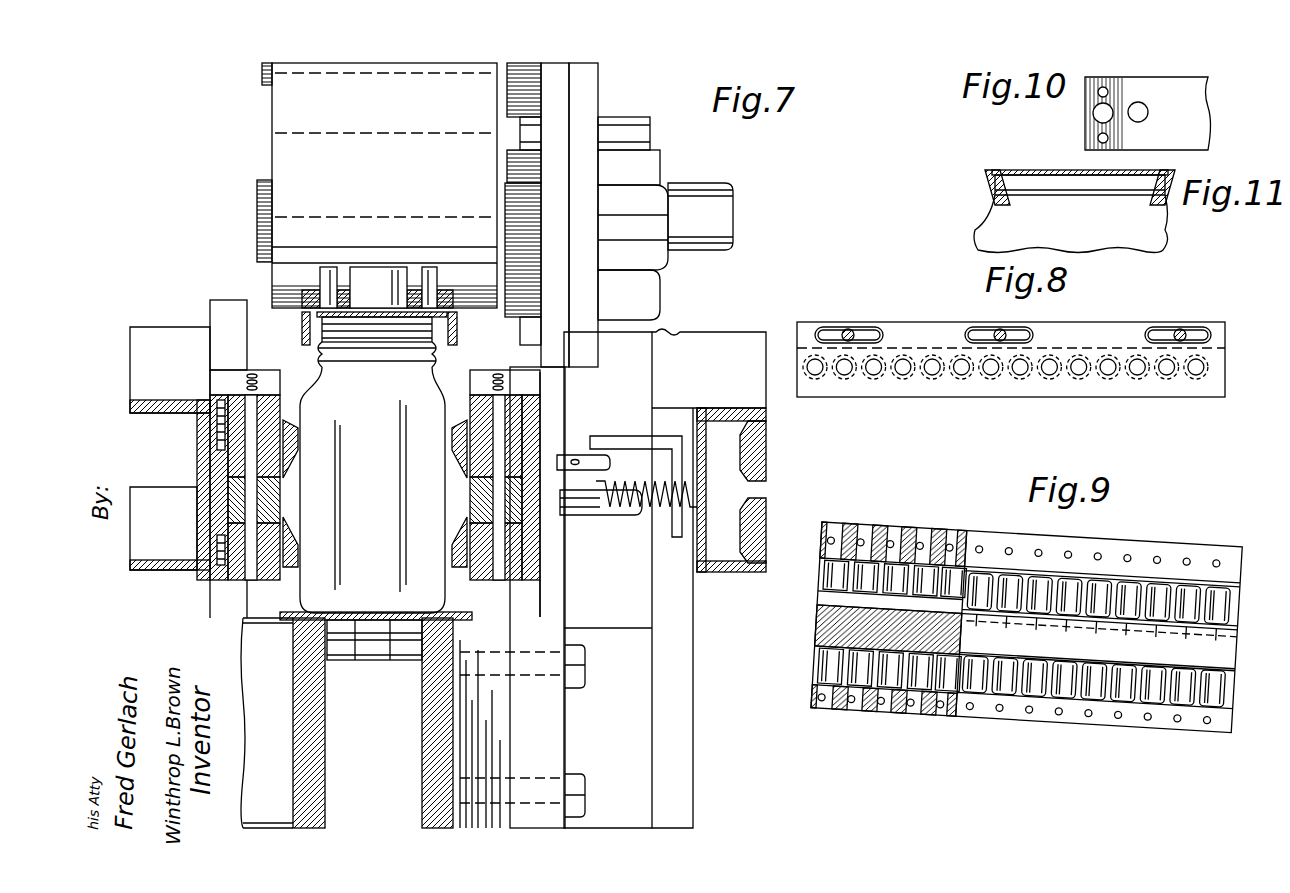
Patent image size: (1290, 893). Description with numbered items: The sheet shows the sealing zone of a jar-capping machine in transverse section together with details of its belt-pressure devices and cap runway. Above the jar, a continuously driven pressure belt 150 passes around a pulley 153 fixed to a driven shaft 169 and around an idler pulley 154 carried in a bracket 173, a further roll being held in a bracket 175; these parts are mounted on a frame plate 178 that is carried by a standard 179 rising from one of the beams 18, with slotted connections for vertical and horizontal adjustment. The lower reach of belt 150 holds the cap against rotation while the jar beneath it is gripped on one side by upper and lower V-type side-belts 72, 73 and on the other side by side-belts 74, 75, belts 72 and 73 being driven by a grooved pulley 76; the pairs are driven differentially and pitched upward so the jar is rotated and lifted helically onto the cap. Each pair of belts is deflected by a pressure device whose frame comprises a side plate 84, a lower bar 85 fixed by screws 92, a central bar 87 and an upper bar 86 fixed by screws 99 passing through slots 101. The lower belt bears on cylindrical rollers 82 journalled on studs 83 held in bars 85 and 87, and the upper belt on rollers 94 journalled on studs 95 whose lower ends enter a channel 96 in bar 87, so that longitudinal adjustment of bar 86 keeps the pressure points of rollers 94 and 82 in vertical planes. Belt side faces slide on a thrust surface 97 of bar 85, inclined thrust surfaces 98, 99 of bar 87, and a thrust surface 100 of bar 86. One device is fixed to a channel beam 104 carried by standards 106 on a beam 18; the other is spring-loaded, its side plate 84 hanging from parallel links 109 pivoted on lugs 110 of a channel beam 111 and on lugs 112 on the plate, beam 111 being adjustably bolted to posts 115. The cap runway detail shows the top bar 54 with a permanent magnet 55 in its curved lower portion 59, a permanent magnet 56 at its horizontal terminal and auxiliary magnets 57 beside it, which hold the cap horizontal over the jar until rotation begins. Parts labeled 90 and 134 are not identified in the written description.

In FIG. 7, the beam 18 is at (430, 796).
In FIG. 10, the top bar 54 is at (1173, 78).
In FIG. 10, the permanent magnet 55 is at (1145, 112).
In FIG. 7, the permanent magnet 56 is at (378, 272).
In FIG. 10, the permanent magnet 56 is at (1100, 115).
In FIG. 7, the auxiliary permanent magnets 57 is at (430, 272).
In FIG. 10, the auxiliary permanent magnets 57 is at (1100, 138).
In FIG. 10, the curved lower portion 59 is at (1208, 118).
In FIG. 7, the upper side-belt 72 is at (770, 452).
In FIG. 7, the lower side-belt 73 is at (770, 522).
In FIG. 7, the upper side-belt 74 is at (375, 606).
In FIG. 7, the lower side-belt 75 is at (323, 549).
In FIG. 7, the grooved pulley 76 is at (405, 657).
In FIG. 7, the rollers 82 is at (468, 537).
In FIG. 9, the rollers 82 is at (1158, 727).
In FIG. 7, the studs 83 is at (505, 588).
In FIG. 9, the studs 83 is at (855, 715).
In FIG. 7, the side plate 84 is at (548, 445).
In FIG. 7, the lower bar 85 is at (540, 572).
In FIG. 9, the lower bar 85 is at (1022, 714).
In FIG. 7, the upper bar 86 is at (530, 407).
In FIG. 8, the upper bar 86 is at (1212, 392).
In FIG. 9, the upper bar 86 is at (1172, 550).
In FIG. 7, the central bar 87 is at (560, 520).
In FIG. 9, the central bar 87 is at (815, 620).
In FIG. 7, the spring pin 90 is at (222, 425).
In FIG. 8, the spring pin 90 is at (1182, 330).
In FIG. 7, the screws 92 is at (218, 545).
In FIG. 7, the rollers 94 is at (297, 447).
In FIG. 9, the rollers 94 is at (832, 582).
In FIG. 7, the studs 95 is at (268, 407).
In FIG. 8, the studs 95 is at (935, 370).
In FIG. 9, the studs 95 is at (868, 528).
In FIG. 7, the channel 96 is at (272, 463).
In FIG. 9, the channel 96 is at (818, 597).
In FIG. 7, the thrust surface 97 is at (478, 590).
In FIG. 9, the thrust surface 97 is at (1085, 700).
In FIG. 7, the inclined thrust surface 98 is at (470, 508).
In FIG. 9, the inclined thrust surface 98 is at (1152, 668).
In FIG. 7, the screws 99 is at (500, 482).
In FIG. 9, the screws 99 is at (1042, 612).
In FIG. 7, the thrust surface 100 is at (452, 412).
In FIG. 9, the thrust surface 100 is at (1118, 567).
In FIG. 8, the slots 101 is at (1160, 327).
In FIG. 7, the channel beam 104 is at (140, 416).
In FIG. 7, the standards 106 is at (228, 302).
In FIG. 7, the parallel links 109 is at (620, 458).
In FIG. 7, the lugs 110 is at (664, 425).
In FIG. 7, the channel beam 111 is at (712, 410).
In FIG. 7, the lugs 112 is at (650, 520).
In FIG. 7, the posts 115 is at (665, 578).
In FIG. 7, the bolt 134 is at (586, 655).
In FIG. 7, the pressure belt 150 is at (384, 185).
In FIG. 7, the pulley 153 is at (270, 140).
In FIG. 7, the idler pulley 154 is at (405, 215).
In FIG. 7, the driven shaft 169 is at (705, 193).
In FIG. 7, the bracket 173 is at (555, 265).
In FIG. 7, the bracket 175 is at (560, 78).
In FIG. 7, the frame plate 178 is at (590, 98).
In FIG. 7, the standard 179 is at (556, 708).